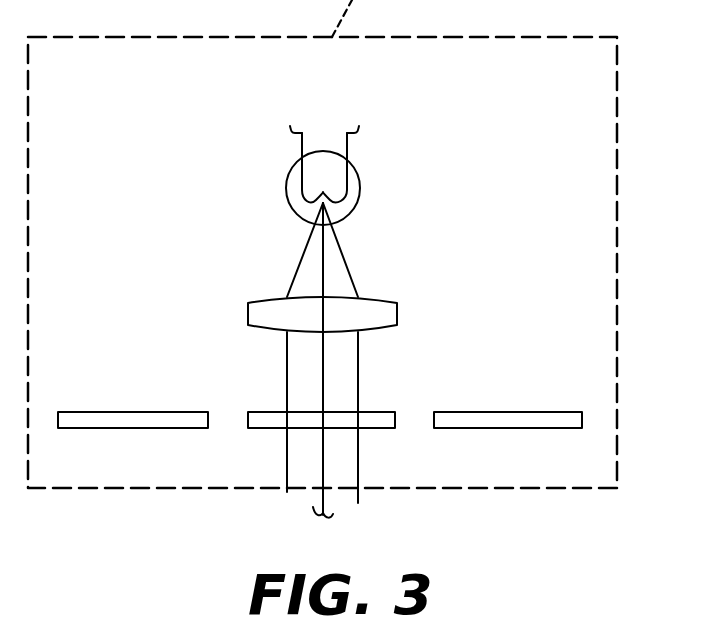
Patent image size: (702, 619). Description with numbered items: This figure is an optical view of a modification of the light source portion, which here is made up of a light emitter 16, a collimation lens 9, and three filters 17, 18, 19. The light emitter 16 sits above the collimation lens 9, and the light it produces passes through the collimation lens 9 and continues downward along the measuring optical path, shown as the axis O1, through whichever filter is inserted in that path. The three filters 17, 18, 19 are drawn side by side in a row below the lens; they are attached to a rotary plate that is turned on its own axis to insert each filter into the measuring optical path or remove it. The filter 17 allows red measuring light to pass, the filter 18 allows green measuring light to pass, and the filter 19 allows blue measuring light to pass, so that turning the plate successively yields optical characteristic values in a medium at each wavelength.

The light emitter 16 is at (360, 188).
The collimation lens 9 is at (385, 299).
The filter 17 is at (137, 412).
The filter 18 is at (395, 412).
The filter 19 is at (513, 412).
The optical axis O1 is at (323, 468).